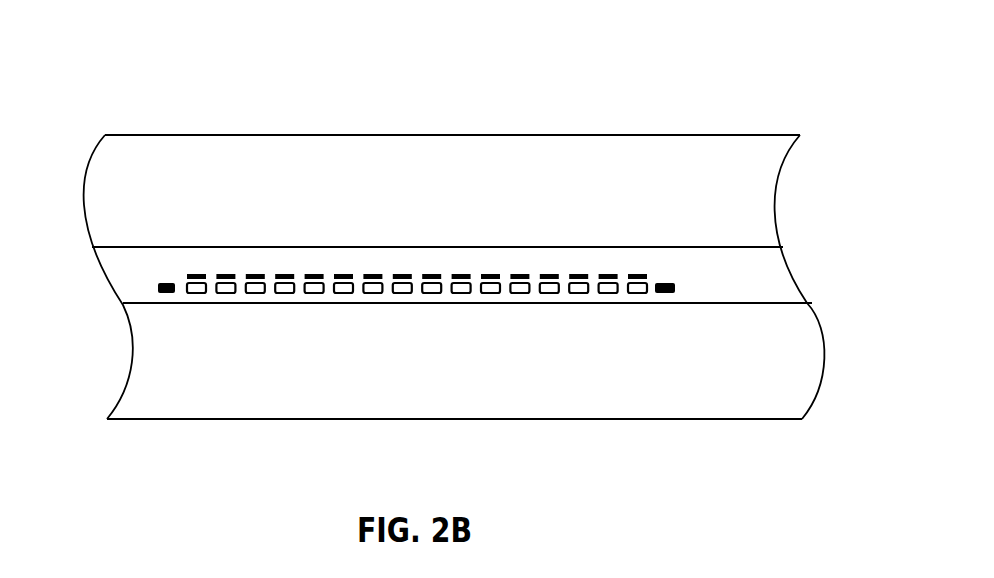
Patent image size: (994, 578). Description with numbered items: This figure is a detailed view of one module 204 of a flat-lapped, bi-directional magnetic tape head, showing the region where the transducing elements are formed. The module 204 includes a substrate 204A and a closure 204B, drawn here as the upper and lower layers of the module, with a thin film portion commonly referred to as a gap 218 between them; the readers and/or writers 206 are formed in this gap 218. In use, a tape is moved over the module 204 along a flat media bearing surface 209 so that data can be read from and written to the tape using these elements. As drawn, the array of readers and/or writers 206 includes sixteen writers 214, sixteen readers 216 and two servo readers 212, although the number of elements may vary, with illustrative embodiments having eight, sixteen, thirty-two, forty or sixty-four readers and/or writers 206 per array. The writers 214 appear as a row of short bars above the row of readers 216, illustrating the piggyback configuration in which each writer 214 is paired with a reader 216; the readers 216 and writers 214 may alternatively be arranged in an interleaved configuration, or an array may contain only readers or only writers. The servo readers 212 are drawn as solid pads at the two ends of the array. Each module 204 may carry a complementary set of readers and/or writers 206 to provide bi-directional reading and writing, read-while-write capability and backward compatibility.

The module 204 is at (122, 106).
The substrate 204A is at (220, 134).
The closure 204B is at (283, 420).
The media bearing surface 209 is at (370, 210).
The readers and/or writers 206 is at (702, 270).
The servo readers 212 is at (158, 288).
The writers 214 is at (579, 274).
The readers 216 is at (549, 293).
The gap 218 is at (797, 275).